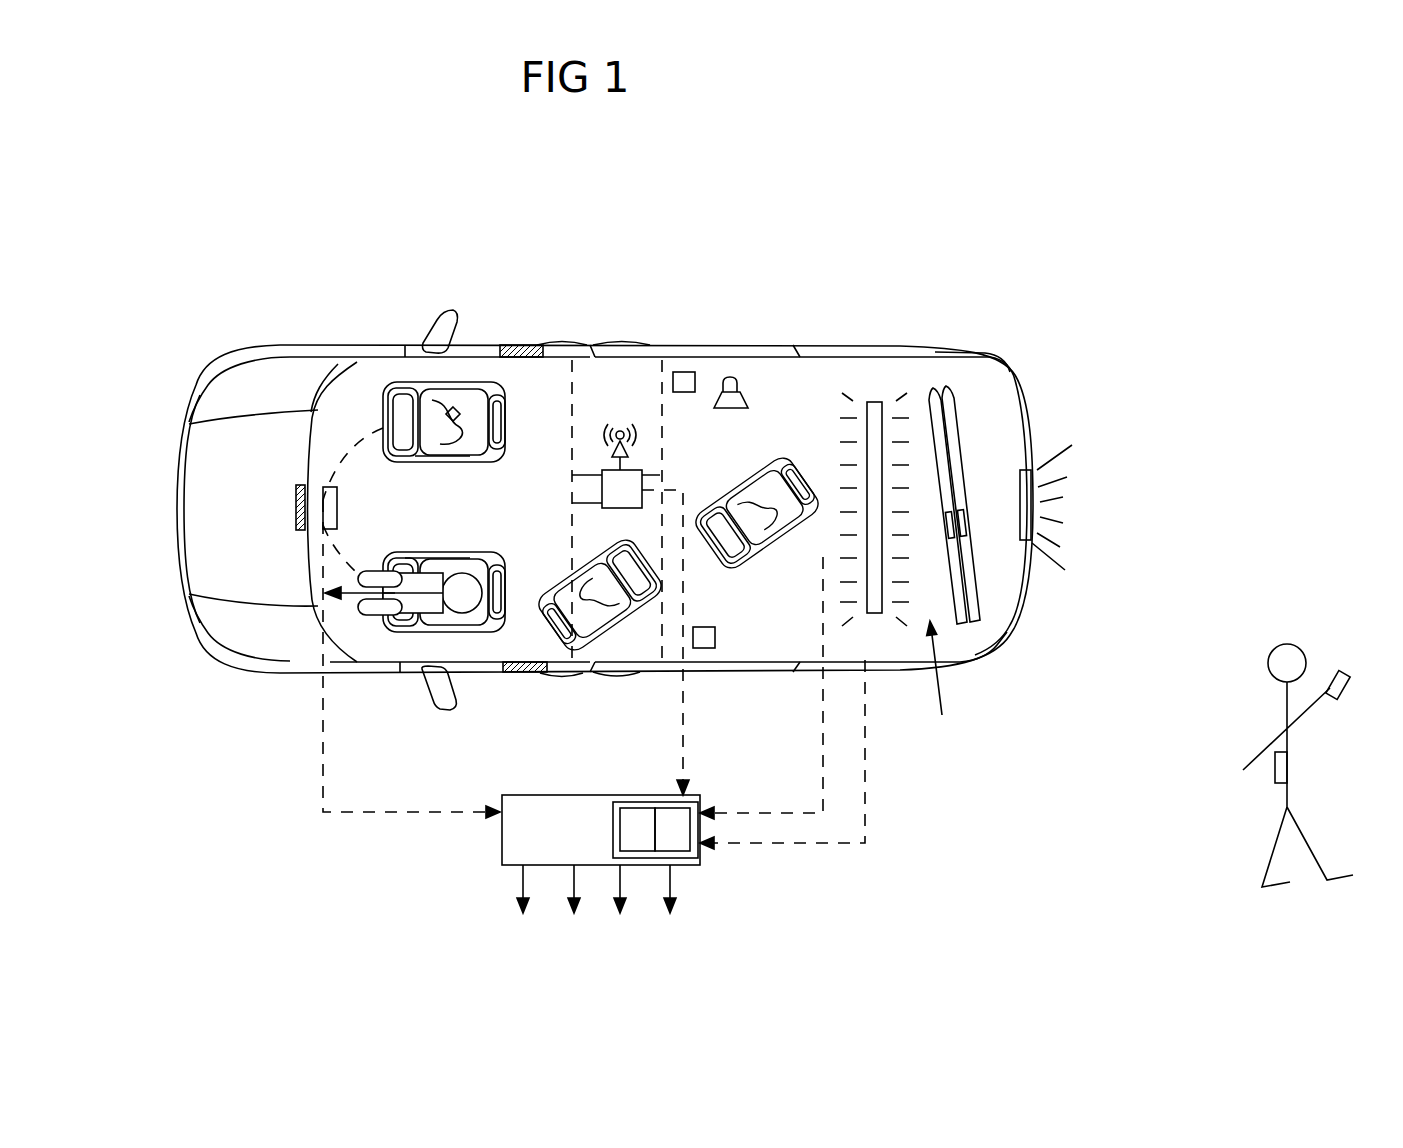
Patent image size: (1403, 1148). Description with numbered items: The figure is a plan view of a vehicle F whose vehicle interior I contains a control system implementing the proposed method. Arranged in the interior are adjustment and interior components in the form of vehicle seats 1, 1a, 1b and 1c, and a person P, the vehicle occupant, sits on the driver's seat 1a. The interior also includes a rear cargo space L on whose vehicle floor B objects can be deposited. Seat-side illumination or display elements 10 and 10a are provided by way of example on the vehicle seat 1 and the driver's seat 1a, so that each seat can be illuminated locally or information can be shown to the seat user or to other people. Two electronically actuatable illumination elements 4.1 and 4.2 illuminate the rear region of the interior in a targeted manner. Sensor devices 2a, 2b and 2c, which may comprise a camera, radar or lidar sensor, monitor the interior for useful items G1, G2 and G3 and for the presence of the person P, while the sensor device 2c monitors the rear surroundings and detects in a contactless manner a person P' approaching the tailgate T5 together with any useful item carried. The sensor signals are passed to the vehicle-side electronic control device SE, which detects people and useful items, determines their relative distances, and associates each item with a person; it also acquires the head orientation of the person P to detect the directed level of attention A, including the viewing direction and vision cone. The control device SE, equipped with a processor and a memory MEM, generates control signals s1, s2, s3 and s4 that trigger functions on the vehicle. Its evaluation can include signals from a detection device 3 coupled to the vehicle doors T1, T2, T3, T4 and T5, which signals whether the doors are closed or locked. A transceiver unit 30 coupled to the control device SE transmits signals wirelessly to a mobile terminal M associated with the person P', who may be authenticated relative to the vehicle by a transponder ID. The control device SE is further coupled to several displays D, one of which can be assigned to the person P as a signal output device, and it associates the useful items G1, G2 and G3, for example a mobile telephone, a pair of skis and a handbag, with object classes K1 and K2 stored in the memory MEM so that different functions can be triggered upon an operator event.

The vehicle F is at (205, 335).
The vehicle seat 1 is at (397, 415).
The driver's seat 1a is at (403, 627).
The vehicle seat 1b is at (580, 620).
The vehicle seat 1c is at (780, 487).
The sensor device 2a is at (325, 507).
The sensor device 2b is at (873, 412).
The sensor device 2c is at (1025, 468).
The detection device 3 is at (628, 488).
The transceiver unit 30 is at (618, 430).
The illumination element 4.1 is at (680, 370).
The illumination element 4.2 is at (707, 640).
The illumination or display element 10 is at (423, 457).
The illumination or display element 10a is at (428, 560).
The directed level of attention A is at (357, 588).
The vehicle floor B is at (941, 686).
The display D is at (527, 350).
The useful item G1 is at (458, 421).
The useful item G2 is at (955, 485).
The useful item G3 is at (741, 383).
The vehicle interior I is at (975, 382).
The rear cargo space L is at (998, 628).
The person P is at (362, 668).
The person P' is at (1298, 699).
The mobile terminal M is at (1343, 673).
The transponder ID is at (1282, 767).
The vehicle door T1 is at (483, 673).
The vehicle door T2 is at (483, 343).
The vehicle door T3 is at (737, 677).
The vehicle door T4 is at (720, 347).
The tailgate T5 is at (1018, 610).
The control device SE is at (601, 830).
The object class K1 is at (637, 829).
The object class K2 is at (672, 829).
The memory MEM is at (698, 858).
The control signal s1 is at (525, 906).
The control signal s2 is at (576, 906).
The control signal s3 is at (622, 906).
The control signal s4 is at (673, 906).